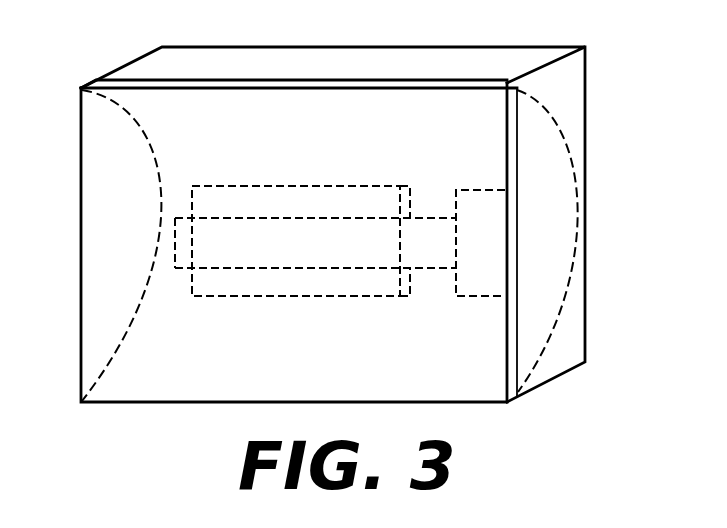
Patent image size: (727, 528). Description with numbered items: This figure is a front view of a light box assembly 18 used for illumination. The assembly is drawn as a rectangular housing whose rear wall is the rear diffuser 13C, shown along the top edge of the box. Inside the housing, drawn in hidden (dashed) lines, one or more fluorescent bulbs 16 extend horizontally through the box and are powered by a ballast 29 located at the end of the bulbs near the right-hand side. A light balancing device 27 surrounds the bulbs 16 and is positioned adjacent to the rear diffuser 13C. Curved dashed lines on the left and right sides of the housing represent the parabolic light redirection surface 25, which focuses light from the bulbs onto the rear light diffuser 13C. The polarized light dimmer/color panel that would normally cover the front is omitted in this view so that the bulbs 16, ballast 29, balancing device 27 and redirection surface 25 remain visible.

The rear diffuser 13C is at (421, 82).
The parabolic light redirection surface 25 is at (557, 137).
The light box assembly 18 is at (121, 403).
The light balancing device 27 is at (305, 186).
The fluorescent bulbs 16 is at (427, 268).
The ballast 29 is at (487, 296).